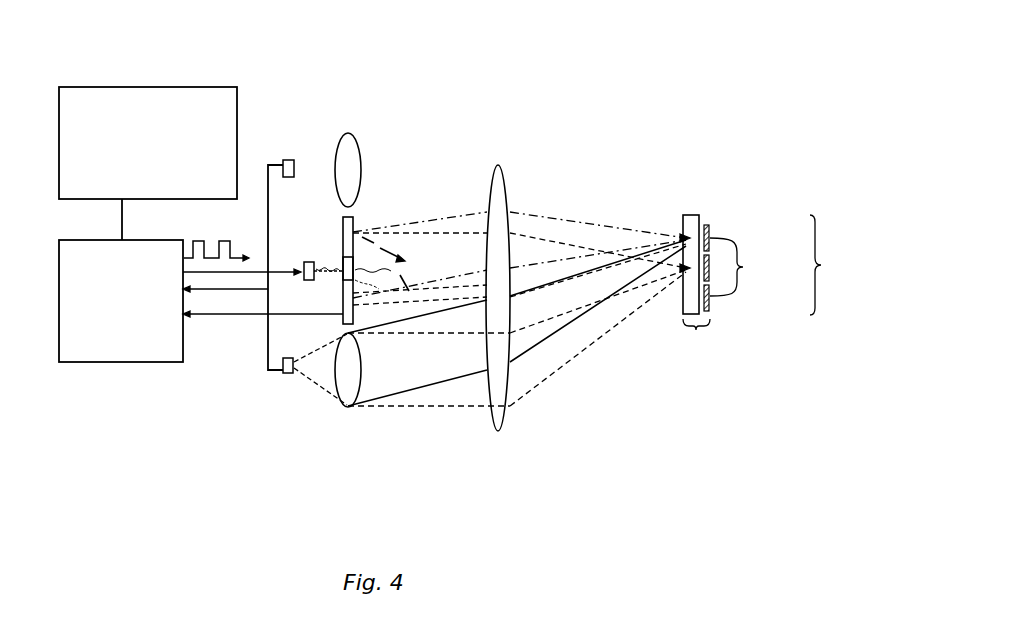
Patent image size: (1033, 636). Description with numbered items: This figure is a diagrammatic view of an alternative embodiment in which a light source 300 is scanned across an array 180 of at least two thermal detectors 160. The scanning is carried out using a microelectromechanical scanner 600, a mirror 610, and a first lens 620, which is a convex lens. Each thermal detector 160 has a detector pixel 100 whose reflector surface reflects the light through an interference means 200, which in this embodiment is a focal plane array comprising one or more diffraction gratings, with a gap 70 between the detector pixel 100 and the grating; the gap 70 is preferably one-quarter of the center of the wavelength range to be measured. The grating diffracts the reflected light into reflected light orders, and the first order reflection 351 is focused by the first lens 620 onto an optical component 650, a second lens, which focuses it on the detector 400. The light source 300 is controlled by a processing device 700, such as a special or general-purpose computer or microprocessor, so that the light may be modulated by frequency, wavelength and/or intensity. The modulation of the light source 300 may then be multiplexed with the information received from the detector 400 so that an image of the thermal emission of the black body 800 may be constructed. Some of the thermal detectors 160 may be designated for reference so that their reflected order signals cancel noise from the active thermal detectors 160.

The image of the thermal emission 800 is at (127, 97).
The processing device 700 is at (118, 348).
The detector 400 is at (290, 158).
The light source 300 is at (306, 262).
The microelectromechanical scanner 600 is at (354, 230).
The mirror 610 is at (406, 262).
The first lens 620 is at (499, 168).
The optical component 650 is at (348, 408).
The first order reflection 351 is at (427, 333).
The interference means 200 is at (690, 214).
The gap 70 is at (704, 224).
The detector pixel 100 is at (751, 267).
The thermal detector 160 is at (699, 338).
The array 180 is at (841, 265).